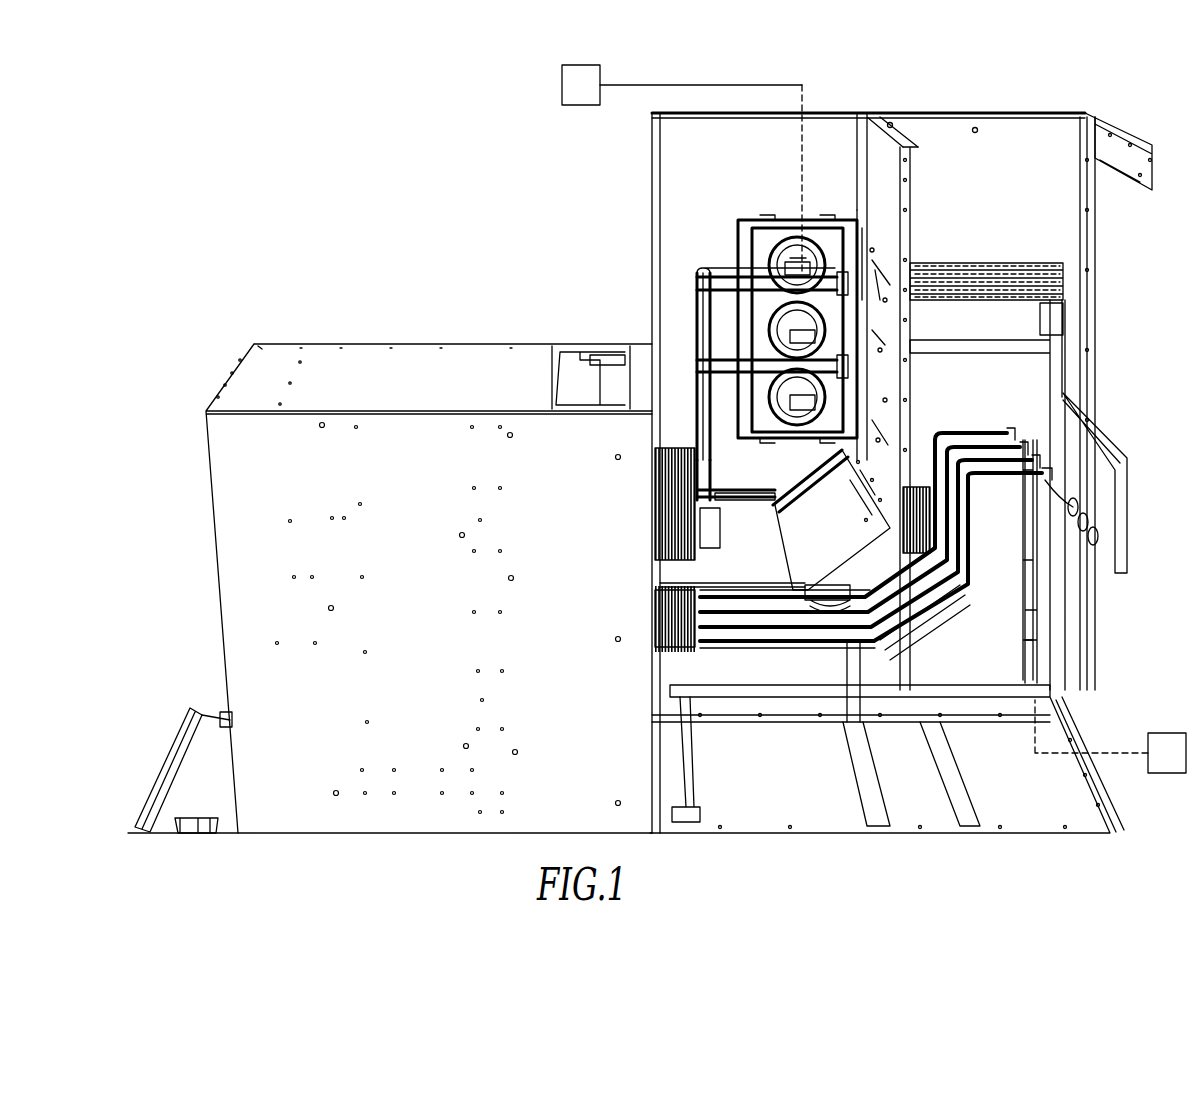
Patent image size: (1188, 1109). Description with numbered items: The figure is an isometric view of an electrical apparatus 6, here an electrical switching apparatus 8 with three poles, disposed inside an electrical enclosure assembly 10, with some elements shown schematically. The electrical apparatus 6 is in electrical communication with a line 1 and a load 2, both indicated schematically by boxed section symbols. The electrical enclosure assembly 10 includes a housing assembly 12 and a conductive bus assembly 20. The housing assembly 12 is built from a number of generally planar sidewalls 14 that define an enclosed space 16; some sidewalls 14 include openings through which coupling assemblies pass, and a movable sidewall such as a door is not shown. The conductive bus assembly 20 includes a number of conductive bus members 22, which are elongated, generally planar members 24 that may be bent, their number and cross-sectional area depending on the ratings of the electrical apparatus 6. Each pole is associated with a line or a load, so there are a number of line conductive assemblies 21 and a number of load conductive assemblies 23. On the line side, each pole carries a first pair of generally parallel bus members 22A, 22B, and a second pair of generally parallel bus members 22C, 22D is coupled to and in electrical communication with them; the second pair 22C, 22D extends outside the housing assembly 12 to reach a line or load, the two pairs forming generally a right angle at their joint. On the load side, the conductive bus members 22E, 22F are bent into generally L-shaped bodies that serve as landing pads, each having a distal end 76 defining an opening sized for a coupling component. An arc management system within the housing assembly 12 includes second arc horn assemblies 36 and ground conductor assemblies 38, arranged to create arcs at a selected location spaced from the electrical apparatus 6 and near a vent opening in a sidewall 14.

The line 1 is at (574, 96).
The load 2 is at (1160, 764).
The electrical apparatus 6 is at (405, 494).
The electrical switching apparatus 8 is at (512, 310).
The electrical enclosure assembly 10 is at (993, 132).
The housing assembly 12 is at (833, 138).
The sidewall 14 is at (667, 173).
The enclosed space 16 is at (697, 665).
The conductive bus assembly 20 is at (822, 488).
The line conductive assembly 21 is at (638, 288).
The conductive bus member 22 is at (693, 287).
The first pair bus member 22A is at (697, 447).
The first pair bus member 22B is at (718, 493).
The second pair bus member 22C is at (737, 277).
The second pair bus member 22D is at (747, 343).
The load side conductive bus member 22E is at (993, 427).
The load side conductive bus member 22F is at (997, 498).
The load conductive assembly 23 is at (915, 639).
The planar member 24 is at (695, 342).
The second arc horn assembly 36 is at (862, 228).
The ground conductor assembly 38 is at (1117, 550).
The distal end 76 is at (1025, 507).